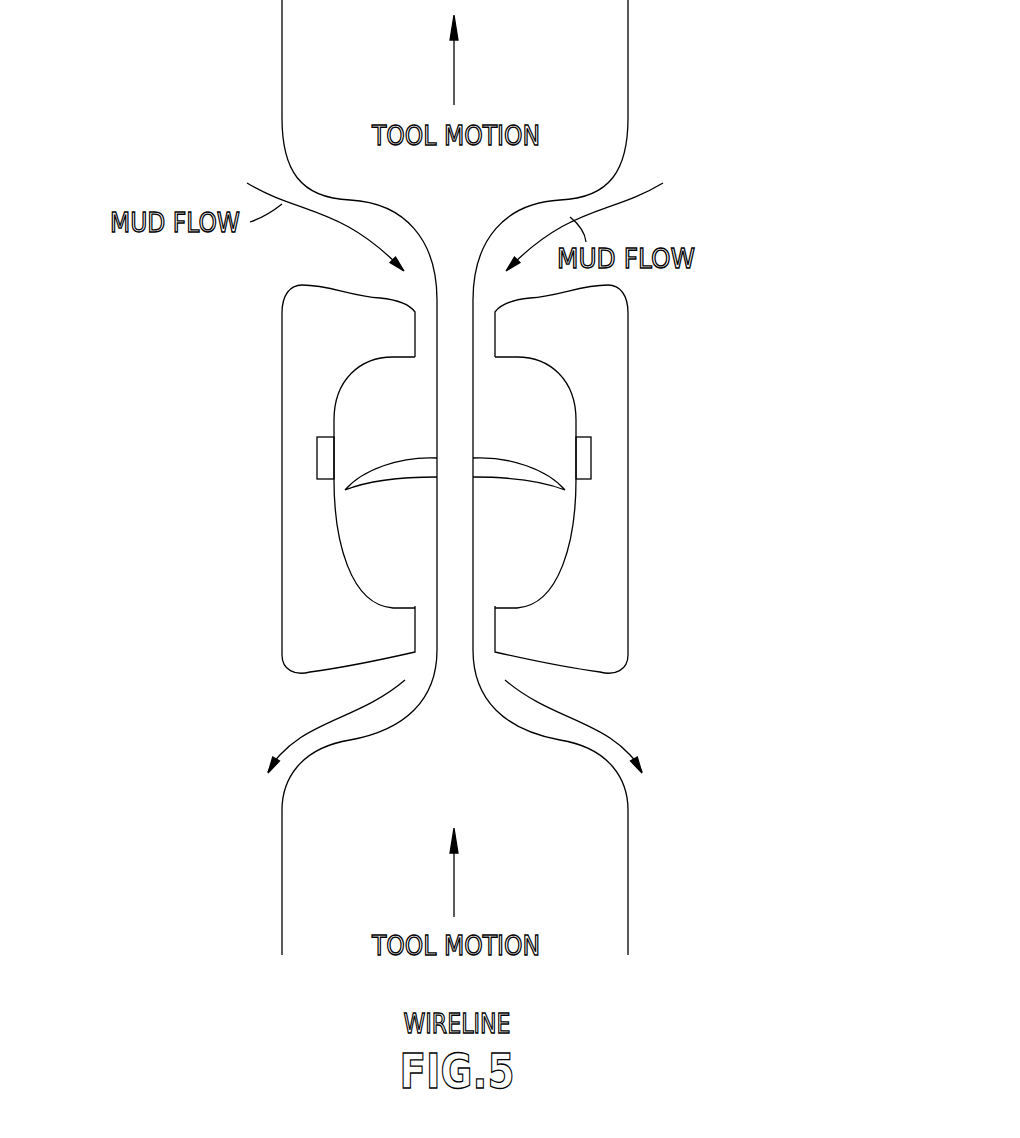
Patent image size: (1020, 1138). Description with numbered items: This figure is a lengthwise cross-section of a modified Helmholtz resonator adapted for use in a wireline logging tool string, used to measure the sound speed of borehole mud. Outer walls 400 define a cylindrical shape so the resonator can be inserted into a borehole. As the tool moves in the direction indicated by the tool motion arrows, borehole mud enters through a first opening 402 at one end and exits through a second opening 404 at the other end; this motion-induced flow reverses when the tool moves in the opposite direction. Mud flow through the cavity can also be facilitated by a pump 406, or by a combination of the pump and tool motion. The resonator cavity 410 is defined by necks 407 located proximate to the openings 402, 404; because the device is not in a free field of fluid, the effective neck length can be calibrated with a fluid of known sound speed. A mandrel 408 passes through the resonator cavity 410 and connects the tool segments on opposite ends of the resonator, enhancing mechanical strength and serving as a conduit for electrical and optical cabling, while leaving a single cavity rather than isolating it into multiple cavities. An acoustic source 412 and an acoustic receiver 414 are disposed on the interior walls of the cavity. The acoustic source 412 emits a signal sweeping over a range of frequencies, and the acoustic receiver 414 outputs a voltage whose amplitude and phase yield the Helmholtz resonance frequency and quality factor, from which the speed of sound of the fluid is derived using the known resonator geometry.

The outer walls 400 is at (628, 332).
The first opening 402 is at (660, 218).
The second opening 404 is at (620, 708).
The pump 406 is at (537, 487).
The necks 407 is at (437, 308).
The mandrel 408 is at (453, 548).
The resonator cavity 410 is at (522, 398).
The acoustic source 412 is at (318, 462).
The acoustic receiver 414 is at (590, 450).